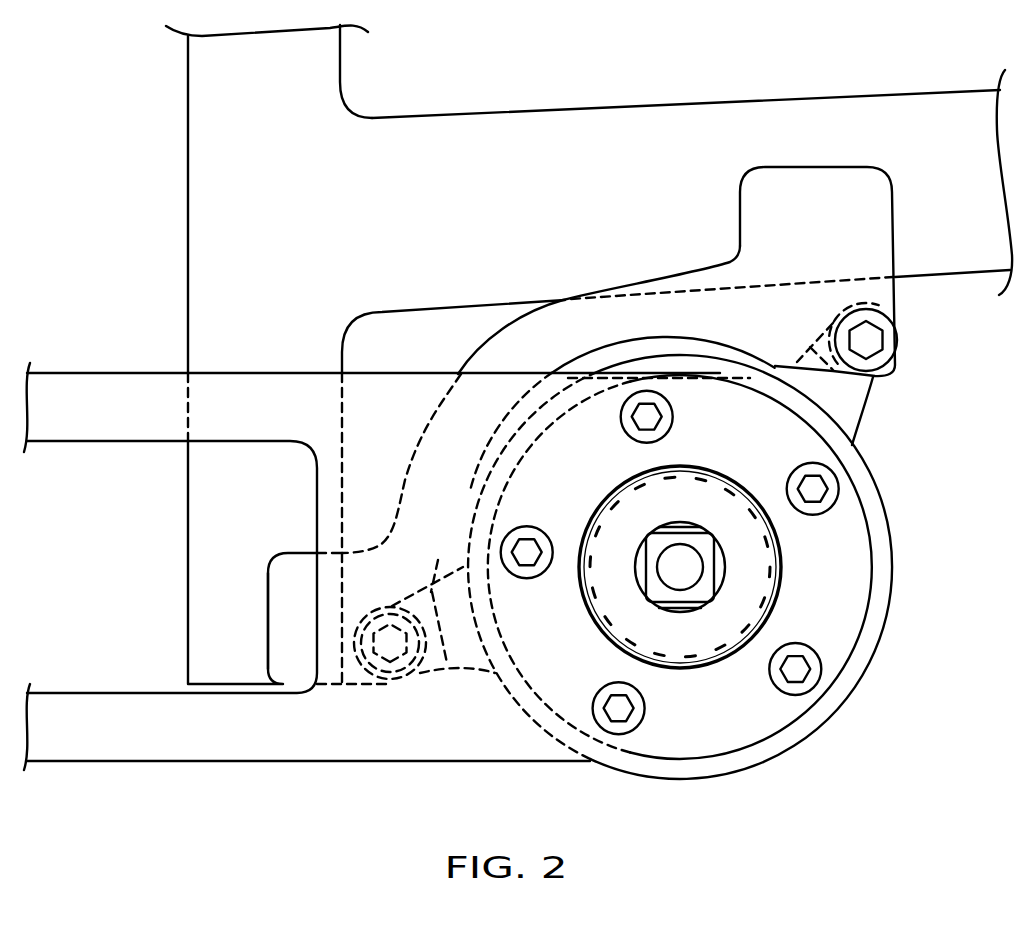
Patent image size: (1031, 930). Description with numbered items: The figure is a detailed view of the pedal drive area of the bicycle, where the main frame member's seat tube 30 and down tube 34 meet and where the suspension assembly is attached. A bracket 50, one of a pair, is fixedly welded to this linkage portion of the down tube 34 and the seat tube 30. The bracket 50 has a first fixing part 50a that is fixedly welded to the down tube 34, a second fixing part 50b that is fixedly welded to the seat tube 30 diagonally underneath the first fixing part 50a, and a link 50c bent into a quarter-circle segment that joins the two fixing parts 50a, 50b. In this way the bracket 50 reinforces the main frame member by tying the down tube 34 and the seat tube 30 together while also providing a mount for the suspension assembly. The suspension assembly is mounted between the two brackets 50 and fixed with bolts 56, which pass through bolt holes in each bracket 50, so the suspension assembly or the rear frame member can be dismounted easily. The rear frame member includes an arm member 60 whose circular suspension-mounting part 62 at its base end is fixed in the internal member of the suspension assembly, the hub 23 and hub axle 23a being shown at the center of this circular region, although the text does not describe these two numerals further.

The hub 23 is at (707, 567).
The hub axle 23a is at (703, 583).
The seat tube 30 is at (327, 77).
The down tube 34 is at (655, 135).
The bracket 50 is at (554, 367).
The first fixing part 50a is at (863, 200).
The second fixing part 50b is at (287, 617).
The link 50c is at (542, 330).
The bolt 56 is at (888, 334).
The arm member 60 is at (302, 755).
The suspension-mounting part 62 is at (747, 736).